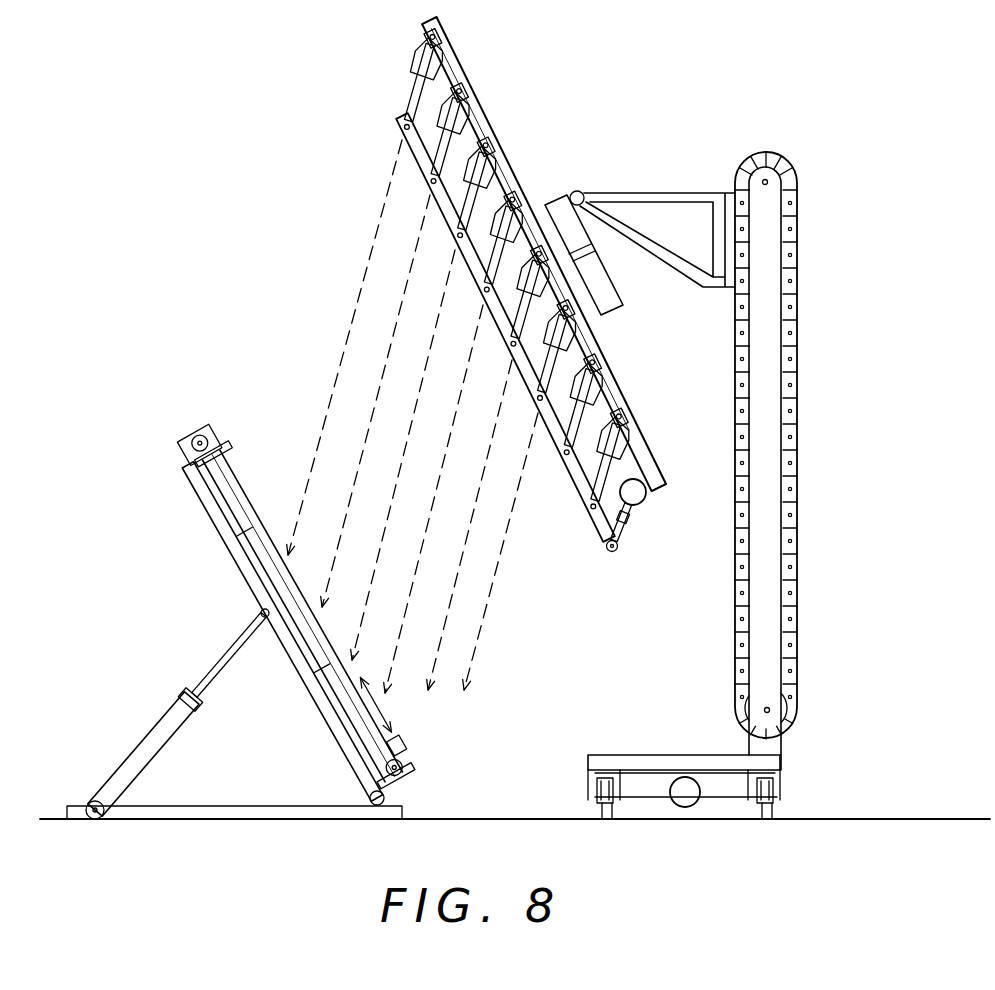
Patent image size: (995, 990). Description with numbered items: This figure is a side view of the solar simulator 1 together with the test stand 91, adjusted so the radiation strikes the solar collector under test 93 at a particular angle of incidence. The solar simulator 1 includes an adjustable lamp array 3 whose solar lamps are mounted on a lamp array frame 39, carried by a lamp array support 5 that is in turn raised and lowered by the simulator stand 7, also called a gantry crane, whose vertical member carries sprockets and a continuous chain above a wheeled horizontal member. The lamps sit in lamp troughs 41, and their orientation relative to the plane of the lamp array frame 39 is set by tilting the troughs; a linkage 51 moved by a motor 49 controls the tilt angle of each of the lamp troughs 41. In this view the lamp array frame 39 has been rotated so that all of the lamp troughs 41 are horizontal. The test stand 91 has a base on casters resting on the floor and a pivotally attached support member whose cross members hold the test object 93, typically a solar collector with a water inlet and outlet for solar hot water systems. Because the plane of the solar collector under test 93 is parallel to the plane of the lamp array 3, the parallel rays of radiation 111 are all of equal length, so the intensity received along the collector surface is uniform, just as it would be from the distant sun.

The solar simulator 1 is at (677, 738).
The adjustable lamp array 3 is at (536, 316).
The lamp array support 5 is at (674, 194).
The simulator stand 7 is at (725, 706).
The lamp array frame 39 is at (458, 72).
The lamp troughs 41 is at (597, 375).
The motor 49 is at (644, 505).
The linkage 51 is at (624, 530).
The test stand 91 is at (178, 681).
The test object 93 is at (263, 530).
The radiation 111 is at (358, 300).